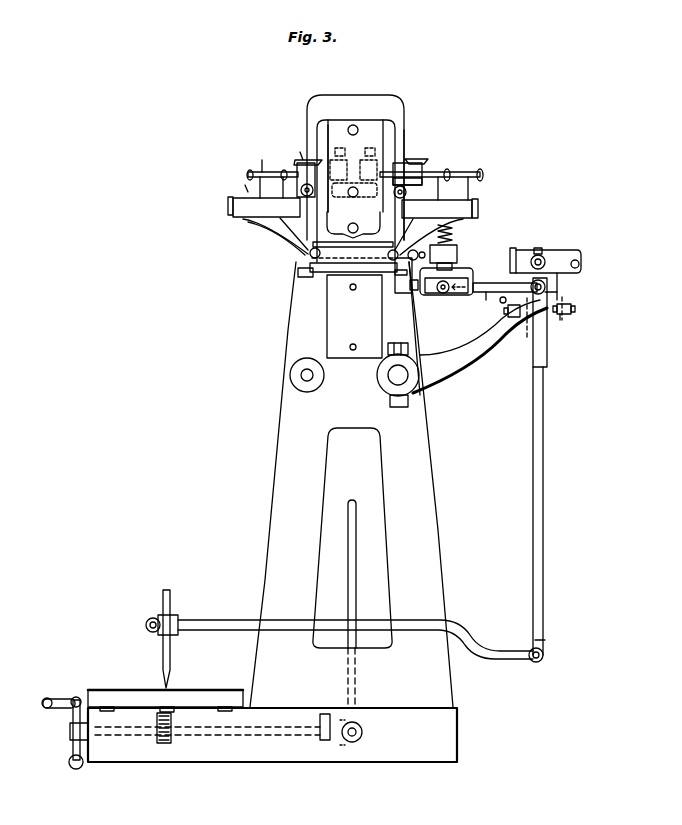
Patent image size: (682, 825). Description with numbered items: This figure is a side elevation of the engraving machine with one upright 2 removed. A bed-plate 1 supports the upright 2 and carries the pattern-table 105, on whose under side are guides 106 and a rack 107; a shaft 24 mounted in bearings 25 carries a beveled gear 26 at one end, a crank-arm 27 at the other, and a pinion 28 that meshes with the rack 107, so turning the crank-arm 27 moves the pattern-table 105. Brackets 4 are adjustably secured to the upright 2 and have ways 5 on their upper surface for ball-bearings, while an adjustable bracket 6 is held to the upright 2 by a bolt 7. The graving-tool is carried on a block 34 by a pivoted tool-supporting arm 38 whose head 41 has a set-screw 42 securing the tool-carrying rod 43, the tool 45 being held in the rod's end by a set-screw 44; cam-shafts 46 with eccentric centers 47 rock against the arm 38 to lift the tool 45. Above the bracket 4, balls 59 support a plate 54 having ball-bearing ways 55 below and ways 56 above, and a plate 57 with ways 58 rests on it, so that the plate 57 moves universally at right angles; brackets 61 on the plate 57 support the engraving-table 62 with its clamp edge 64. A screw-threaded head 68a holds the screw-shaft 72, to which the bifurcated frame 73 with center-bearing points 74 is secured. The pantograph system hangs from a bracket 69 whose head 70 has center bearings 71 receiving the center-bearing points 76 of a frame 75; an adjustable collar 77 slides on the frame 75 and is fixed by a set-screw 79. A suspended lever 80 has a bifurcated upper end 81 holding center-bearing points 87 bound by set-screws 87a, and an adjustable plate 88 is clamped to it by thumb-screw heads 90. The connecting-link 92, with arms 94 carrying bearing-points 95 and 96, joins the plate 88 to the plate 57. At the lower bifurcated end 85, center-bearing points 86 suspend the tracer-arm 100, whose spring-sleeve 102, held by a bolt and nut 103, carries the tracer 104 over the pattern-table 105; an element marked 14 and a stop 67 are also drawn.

The bed-plate 1 is at (452, 738).
The upright 2 is at (272, 498).
The bracket 4 is at (326, 305).
The ways 5 is at (300, 274).
The adjustable bracket 6 is at (332, 140).
The bolt 7 is at (353, 124).
The pivot shaft 14 is at (388, 377).
The shaft 24 is at (238, 736).
The bearing 25 is at (158, 740).
The beveled gear 26 is at (358, 738).
The crank-arm 27 is at (50, 712).
The pinion 28 is at (170, 740).
The block 34 is at (404, 155).
The tool-supporting arm 38 is at (353, 168).
The head 41 is at (408, 190).
The set-screw 42 is at (447, 168).
The tool-carrying rod 43 is at (261, 154).
The set-screw 44 is at (247, 175).
The tool 45 is at (364, 185).
The cam-shaft 46 is at (361, 192).
The center 47 is at (336, 205).
The plate 54 is at (310, 253).
The ball-bearing ways 55 is at (310, 267).
The ball-bearing ways 56 is at (380, 246).
The plate 57 is at (280, 239).
The ball-bearing ways 58 is at (343, 231).
The balls 59 is at (406, 282).
The bracket 61 is at (243, 220).
The engraving-table 62 is at (352, 208).
The clamp edge 64 is at (228, 204).
The stop 67 is at (235, 185).
The screw-threaded head 68a is at (458, 254).
The bracket 69 is at (468, 348).
The head 70 is at (560, 318).
The center bearings 71 is at (552, 323).
The screw-shaft 72 is at (454, 233).
The bifurcated frame 73 is at (473, 276).
The center-bearing points 74 is at (483, 304).
The frame 75 is at (560, 275).
The center-bearing points 76 is at (514, 317).
The adjustable collar 77 is at (562, 250).
The set-screw 79 is at (579, 261).
The suspended lever 80 is at (545, 470).
The bifurcated upper end 81 is at (531, 287).
The lower bifurcated end 85 is at (546, 640).
The center-bearing points 86 is at (540, 659).
The center-bearing points 87 is at (532, 258).
The set-screw 87a is at (538, 248).
The adjustable plate 88 is at (547, 352).
The thumb-screw head 90 is at (501, 300).
The connecting-link 92 is at (480, 306).
The arms 94 is at (443, 294).
The bearing-points 95 is at (560, 286).
The bearing-points 96 is at (425, 292).
The tracer-arm 100 is at (241, 619).
The spring-sleeve 102 is at (176, 634).
The bolt and nut 103 is at (150, 622).
The tracer 104 is at (162, 668).
The pattern-table 105 is at (112, 689).
The guides 106 is at (114, 711).
The rack 107 is at (180, 716).